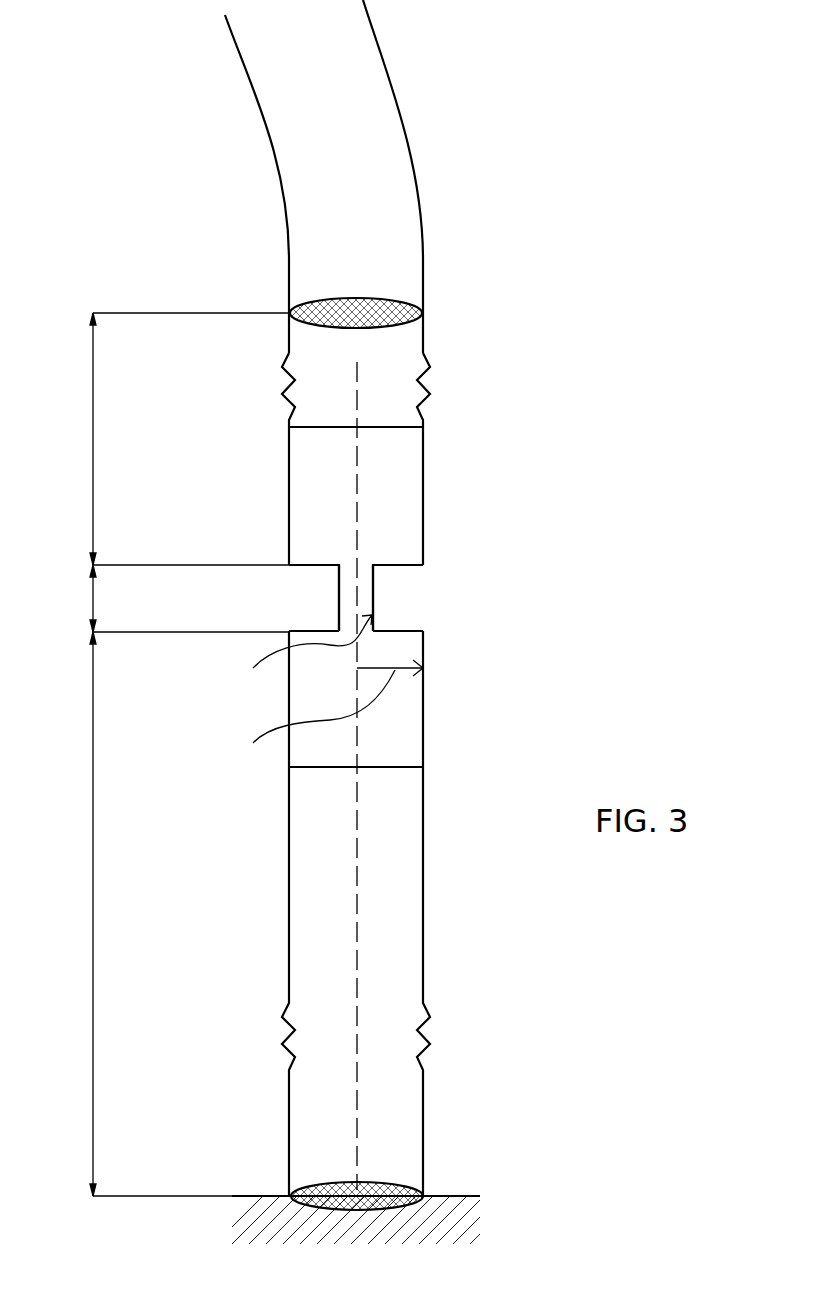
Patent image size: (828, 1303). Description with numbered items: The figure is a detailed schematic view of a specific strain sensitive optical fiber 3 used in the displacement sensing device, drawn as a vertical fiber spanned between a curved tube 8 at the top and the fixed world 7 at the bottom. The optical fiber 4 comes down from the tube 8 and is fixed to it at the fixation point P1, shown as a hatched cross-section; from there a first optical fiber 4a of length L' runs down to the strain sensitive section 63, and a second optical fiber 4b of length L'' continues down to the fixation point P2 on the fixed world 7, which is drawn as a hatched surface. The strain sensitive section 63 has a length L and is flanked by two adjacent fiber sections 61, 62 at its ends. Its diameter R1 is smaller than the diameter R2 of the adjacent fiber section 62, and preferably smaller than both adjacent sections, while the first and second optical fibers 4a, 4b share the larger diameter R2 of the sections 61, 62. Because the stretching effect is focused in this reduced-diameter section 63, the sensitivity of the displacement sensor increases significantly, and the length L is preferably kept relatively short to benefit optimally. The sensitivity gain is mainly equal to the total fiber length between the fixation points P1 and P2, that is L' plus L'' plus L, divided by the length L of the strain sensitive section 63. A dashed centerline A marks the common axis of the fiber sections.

The strain sensitive optical fiber 3 is at (226, 716).
The optical fiber 4 is at (405, 132).
The first optical fiber 4a is at (449, 465).
The second optical fiber 4b is at (448, 983).
The fixed world 7 is at (460, 1195).
The tube 8 is at (531, 246).
The adjacent fiber section 61 is at (423, 516).
The adjacent fiber section 62 is at (423, 700).
The strain sensitive section 63 is at (373, 592).
The fixation point on the tube P1 is at (355, 297).
The fixation point on the fixed world P2 is at (393, 1182).
The diameter of the strain sensitive section R1 is at (299, 660).
The diameter of the adjacent fiber section R2 is at (325, 720).
The axis A is at (355, 820).
The length of the strain sensitive section L is at (172, 598).
The length of the first optical fiber L' is at (172, 439).
The length of the second optical fiber L'' is at (142, 914).